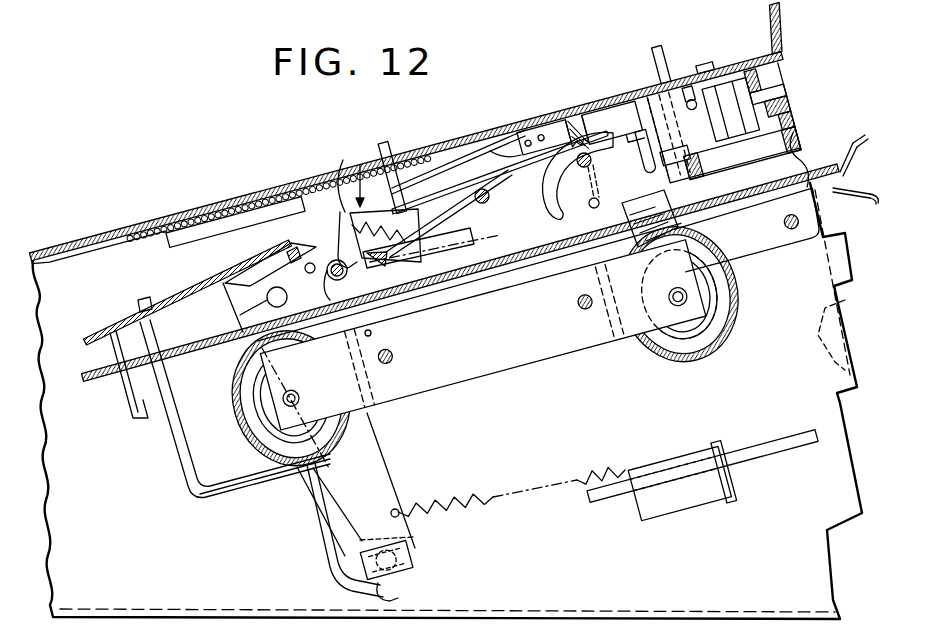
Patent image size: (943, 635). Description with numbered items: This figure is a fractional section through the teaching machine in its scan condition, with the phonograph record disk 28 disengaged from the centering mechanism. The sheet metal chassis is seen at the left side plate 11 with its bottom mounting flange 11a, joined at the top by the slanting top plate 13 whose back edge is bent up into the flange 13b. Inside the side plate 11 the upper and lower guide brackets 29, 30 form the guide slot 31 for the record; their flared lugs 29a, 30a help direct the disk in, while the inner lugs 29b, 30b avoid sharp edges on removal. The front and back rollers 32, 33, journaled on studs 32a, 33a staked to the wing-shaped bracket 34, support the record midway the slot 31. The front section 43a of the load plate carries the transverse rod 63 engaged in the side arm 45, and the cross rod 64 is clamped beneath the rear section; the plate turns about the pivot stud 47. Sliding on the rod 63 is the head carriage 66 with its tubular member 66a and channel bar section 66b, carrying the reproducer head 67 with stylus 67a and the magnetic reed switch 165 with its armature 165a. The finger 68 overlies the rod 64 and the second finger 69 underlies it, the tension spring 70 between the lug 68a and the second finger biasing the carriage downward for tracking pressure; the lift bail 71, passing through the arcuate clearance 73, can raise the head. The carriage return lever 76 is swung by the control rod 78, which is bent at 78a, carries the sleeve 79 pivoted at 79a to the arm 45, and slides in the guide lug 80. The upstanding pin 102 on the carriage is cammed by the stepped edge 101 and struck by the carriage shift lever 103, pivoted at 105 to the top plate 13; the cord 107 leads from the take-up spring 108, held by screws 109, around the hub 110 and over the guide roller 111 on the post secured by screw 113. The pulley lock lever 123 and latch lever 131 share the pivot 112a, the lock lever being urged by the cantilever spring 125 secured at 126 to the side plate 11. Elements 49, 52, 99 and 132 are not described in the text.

The left side plate 11 is at (603, 431).
The mounting flange 11a is at (618, 584).
The top plate 13 is at (150, 221).
The flange 13b is at (779, 22).
The phonograph record disk 28 is at (517, 266).
The upper guide bracket 29 is at (797, 170).
The oblique lug 29a is at (860, 158).
The lug 29b is at (666, 162).
The lower guide bracket 30 is at (823, 191).
The oblique lug 30a is at (876, 205).
The lug 30b is at (651, 272).
The guide slot 31 is at (752, 246).
The front roller 32 is at (291, 479).
The stud 32a is at (311, 374).
The back roller 33 is at (716, 356).
The stud 33a is at (672, 356).
The wing-shaped bracket 34 is at (496, 364).
The front section of the load plate 43a is at (210, 288).
The left side arm 45 is at (390, 478).
The pivot stud 47 is at (240, 315).
The spring 49 is at (481, 494).
The post 52 is at (133, 418).
The transverse rod 63 is at (371, 336).
The cross rod 64 is at (489, 196).
The head carriage 66 is at (364, 166).
The transverse tubular member 66a is at (348, 274).
The channel bar section 66b is at (340, 222).
The reproducer head 67 is at (458, 162).
The stylus 67a is at (448, 299).
The finger 68 is at (465, 185).
The lug 68a is at (343, 165).
The second finger 69 is at (480, 236).
The tension spring 70 is at (400, 230).
The lift bail 71 is at (592, 166).
The arcuate clearance 73 is at (565, 210).
The carriage return lever 76 is at (268, 262).
The control rod 78 is at (178, 454).
The bend of the control rod 78a is at (256, 497).
The sleeve 79 is at (384, 597).
The pivot 79a is at (416, 563).
The guide lug 80 is at (734, 479).
The chain 99 is at (297, 190).
The stepped edge 101 is at (238, 212).
The upstanding pin 102 is at (388, 140).
The carriage shift lever 103 is at (618, 112).
The pivot 105 is at (652, 68).
The cord 107 is at (693, 98).
The take-up spring 108 is at (568, 122).
The screws 109 is at (528, 142).
The hub 110 is at (747, 112).
The guide roller 111 is at (672, 156).
The pivot 112a is at (710, 214).
The screw 113 is at (726, 62).
The pulley lock lever 123 is at (765, 140).
The cantilever spring 125 is at (800, 140).
The securing point 126 is at (826, 348).
The latch lever 131 is at (772, 160).
The bar 132 is at (755, 95).
The magnetic reed switch 165 is at (287, 297).
The magnetic armature 165a is at (312, 262).